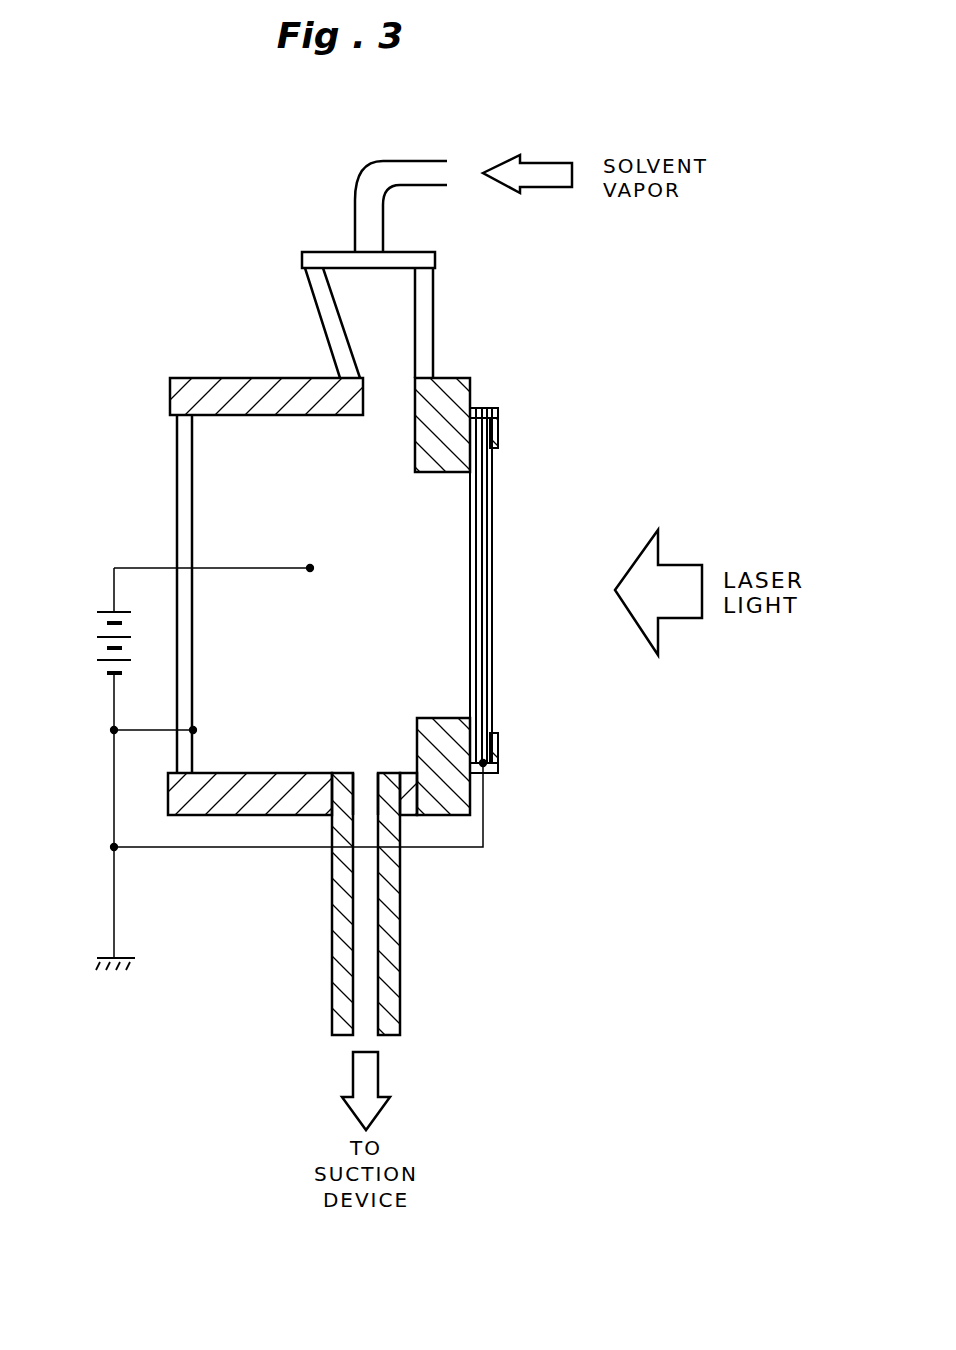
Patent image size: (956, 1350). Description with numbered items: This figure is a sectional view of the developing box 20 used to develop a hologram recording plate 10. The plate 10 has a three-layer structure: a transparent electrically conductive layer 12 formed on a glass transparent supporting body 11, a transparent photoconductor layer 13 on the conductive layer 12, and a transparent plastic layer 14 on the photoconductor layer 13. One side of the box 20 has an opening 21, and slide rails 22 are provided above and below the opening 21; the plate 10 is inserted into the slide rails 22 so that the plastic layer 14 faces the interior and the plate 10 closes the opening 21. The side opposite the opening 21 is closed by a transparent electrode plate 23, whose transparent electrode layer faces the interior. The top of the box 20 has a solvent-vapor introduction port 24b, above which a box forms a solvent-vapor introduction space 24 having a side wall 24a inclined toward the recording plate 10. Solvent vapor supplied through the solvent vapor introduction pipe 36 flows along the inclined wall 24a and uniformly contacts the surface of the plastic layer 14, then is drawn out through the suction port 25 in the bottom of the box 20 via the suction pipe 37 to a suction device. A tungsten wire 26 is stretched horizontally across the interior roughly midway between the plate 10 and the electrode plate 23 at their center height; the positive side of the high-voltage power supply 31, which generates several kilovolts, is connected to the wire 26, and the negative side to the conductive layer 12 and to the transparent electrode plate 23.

The hologram recording plate 10 is at (480, 585).
The transparent supporting body 11 is at (490, 708).
The transparent electrically conductive layer 12 is at (487, 672).
The transparent photoconductor layer 13 is at (482, 538).
The transparent plastic layer 14 is at (472, 503).
The developing box 20 is at (266, 549).
The opening 21 is at (440, 718).
The slide rails 22 is at (497, 428).
The transparent electrode plate 23 is at (182, 520).
The solvent-vapor introduction space 24 is at (403, 315).
The inclined side wall 24a is at (323, 310).
The solvent-vapor introduction port 24b is at (396, 403).
The suction port 25 is at (368, 778).
The tungsten wire 26 is at (310, 568).
The high-voltage power supply 31 is at (97, 650).
The solvent vapor introduction pipe 36 is at (418, 168).
The suction pipe 37 is at (400, 935).